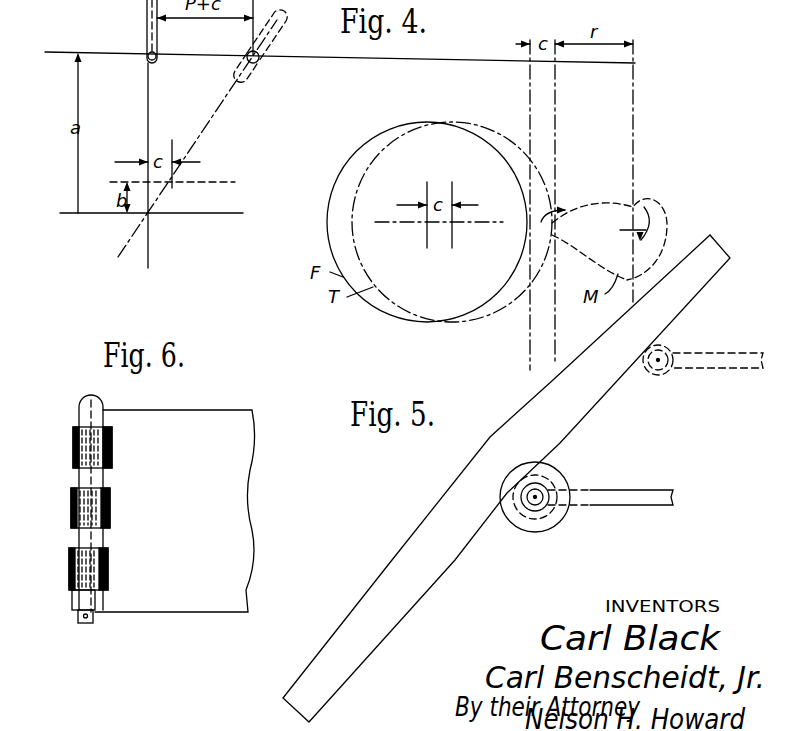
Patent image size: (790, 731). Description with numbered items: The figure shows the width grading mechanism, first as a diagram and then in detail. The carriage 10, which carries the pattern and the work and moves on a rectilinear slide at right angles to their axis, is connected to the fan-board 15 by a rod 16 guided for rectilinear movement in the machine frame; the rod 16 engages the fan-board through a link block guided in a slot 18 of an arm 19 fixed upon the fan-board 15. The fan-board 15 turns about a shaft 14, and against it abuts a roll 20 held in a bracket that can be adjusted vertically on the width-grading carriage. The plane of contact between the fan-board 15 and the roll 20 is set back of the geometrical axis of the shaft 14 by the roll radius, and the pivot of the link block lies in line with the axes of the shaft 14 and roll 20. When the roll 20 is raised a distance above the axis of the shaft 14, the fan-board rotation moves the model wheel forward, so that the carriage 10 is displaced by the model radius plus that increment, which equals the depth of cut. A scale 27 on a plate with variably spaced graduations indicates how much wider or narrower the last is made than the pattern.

In FIG. 4, the carriage 10 is at (633, 108).
In FIG. 4, the shaft 14 is at (149, 216).
In FIG. 5, the shaft 14 is at (518, 513).
In FIG. 4, the fan-board 15 is at (149, 255).
In FIG. 5, the fan-board 15 is at (455, 502).
In FIG. 4, the rod 16 is at (438, 62).
In FIG. 4, the slot 18 is at (147, 22).
In FIG. 4, the arm 19 is at (151, 101).
In FIG. 4, the roll 20 is at (150, 183).
In FIG. 5, the roll 20 is at (541, 490).
In FIG. 6, the roll 20 is at (76, 508).
In FIG. 6, the scale 27 is at (175, 511).